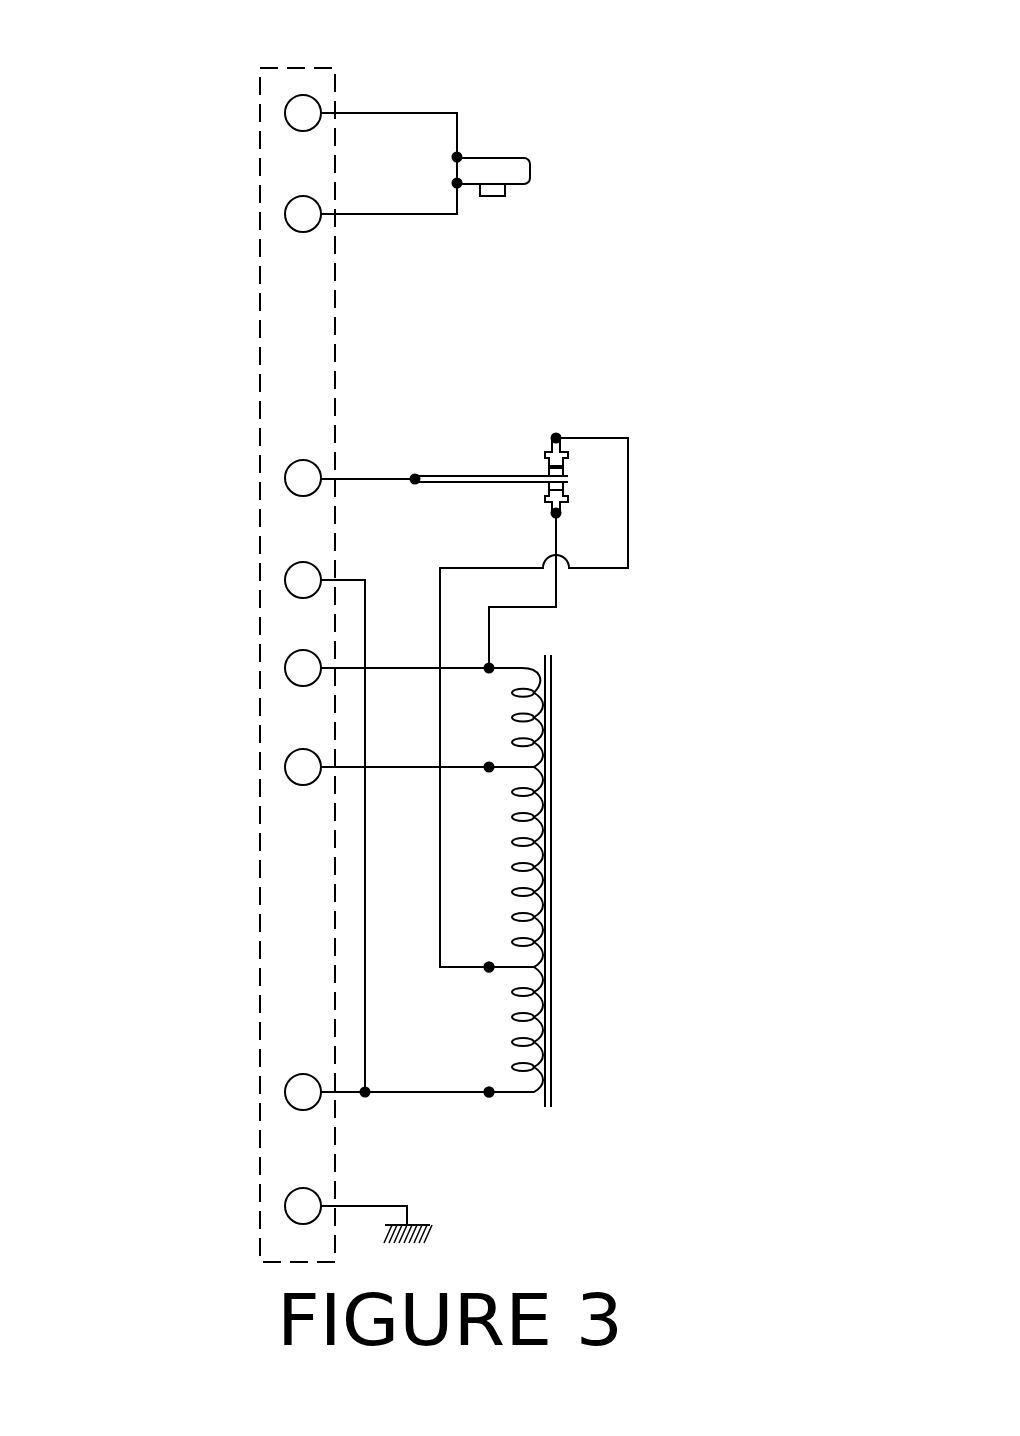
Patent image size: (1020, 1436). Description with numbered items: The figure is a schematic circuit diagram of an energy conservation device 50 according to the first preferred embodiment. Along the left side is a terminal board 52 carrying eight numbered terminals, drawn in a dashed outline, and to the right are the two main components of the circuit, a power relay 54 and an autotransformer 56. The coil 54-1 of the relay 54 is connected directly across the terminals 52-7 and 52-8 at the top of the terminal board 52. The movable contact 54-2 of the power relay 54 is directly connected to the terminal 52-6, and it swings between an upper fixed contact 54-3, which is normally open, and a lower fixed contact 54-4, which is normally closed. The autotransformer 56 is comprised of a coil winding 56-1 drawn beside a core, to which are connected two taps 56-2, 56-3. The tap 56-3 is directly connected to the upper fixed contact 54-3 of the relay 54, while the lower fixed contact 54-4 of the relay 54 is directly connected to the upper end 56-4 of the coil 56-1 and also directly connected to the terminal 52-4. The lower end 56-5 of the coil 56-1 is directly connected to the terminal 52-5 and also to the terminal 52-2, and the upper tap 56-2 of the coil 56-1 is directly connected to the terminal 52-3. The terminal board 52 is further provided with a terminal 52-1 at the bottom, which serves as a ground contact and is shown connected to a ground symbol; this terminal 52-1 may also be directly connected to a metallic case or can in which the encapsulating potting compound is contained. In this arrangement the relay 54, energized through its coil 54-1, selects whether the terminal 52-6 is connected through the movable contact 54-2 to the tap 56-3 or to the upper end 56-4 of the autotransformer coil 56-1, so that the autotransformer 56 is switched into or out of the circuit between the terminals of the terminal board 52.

The energy conservation device 50 is at (441, 631).
The terminal board 52 is at (293, 631).
The terminal 52-1 is at (285, 1207).
The terminal 52-2 is at (285, 1093).
The terminal 52-3 is at (285, 768).
The terminal 52-4 is at (285, 669).
The terminal 52-5 is at (285, 581).
The terminal 52-6 is at (285, 479).
The terminal 52-7 is at (285, 215).
The terminal 52-8 is at (285, 114).
The power relay 54 is at (536, 321).
The coil 54-1 is at (525, 160).
The movable contact 54-2 is at (512, 476).
The upper fixed contact 54-3 is at (549, 450).
The lower fixed contact 54-4 is at (548, 505).
The autotransformer 56 is at (536, 894).
The coil winding 56-1 is at (515, 995).
The tap 56-2 is at (492, 765).
The tap 56-3 is at (492, 965).
The upper end 56-4 is at (492, 666).
The lower end 56-5 is at (488, 1098).